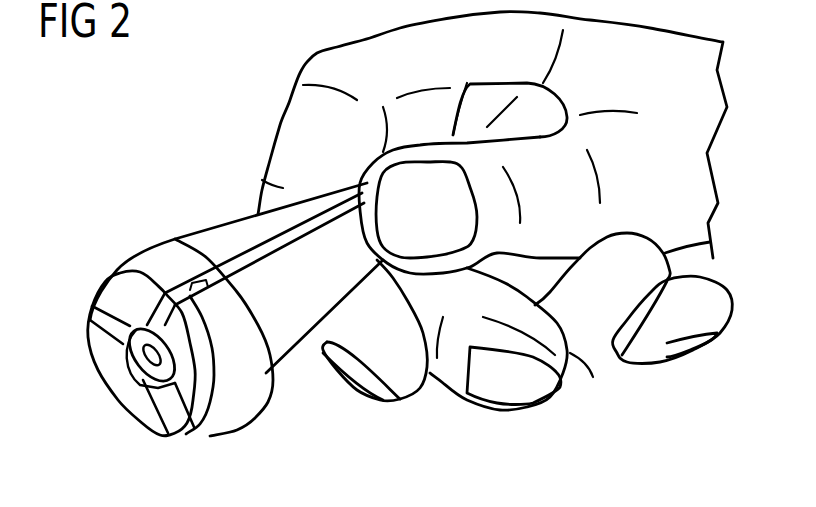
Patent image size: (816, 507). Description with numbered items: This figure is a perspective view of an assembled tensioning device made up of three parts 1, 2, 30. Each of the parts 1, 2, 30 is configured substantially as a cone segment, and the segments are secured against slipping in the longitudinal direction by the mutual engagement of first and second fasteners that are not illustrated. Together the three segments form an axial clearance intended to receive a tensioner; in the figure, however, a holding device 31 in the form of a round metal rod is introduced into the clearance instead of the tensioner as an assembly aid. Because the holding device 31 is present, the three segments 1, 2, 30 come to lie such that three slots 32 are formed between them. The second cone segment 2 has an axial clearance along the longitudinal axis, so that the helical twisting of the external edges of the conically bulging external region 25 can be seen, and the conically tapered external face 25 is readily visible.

The first cone segment 1 is at (138, 258).
The second cone segment 2 is at (240, 413).
The conically tapered external face 25 is at (230, 235).
The third cone segment 30 is at (112, 362).
The holding device 31 is at (160, 372).
The slots 32 is at (318, 222).